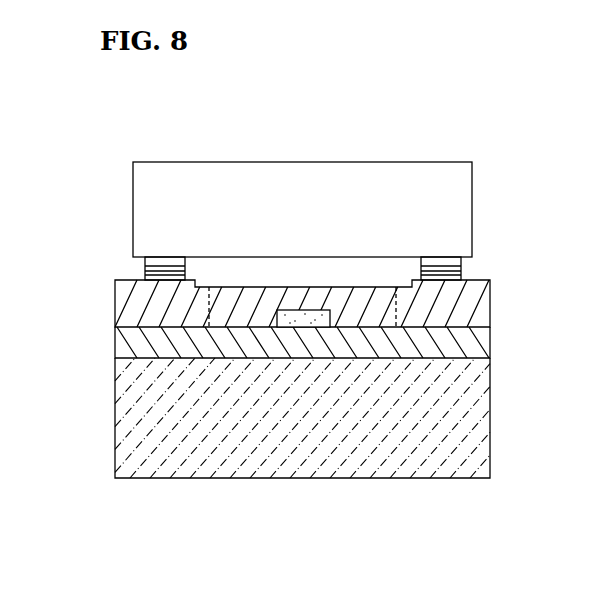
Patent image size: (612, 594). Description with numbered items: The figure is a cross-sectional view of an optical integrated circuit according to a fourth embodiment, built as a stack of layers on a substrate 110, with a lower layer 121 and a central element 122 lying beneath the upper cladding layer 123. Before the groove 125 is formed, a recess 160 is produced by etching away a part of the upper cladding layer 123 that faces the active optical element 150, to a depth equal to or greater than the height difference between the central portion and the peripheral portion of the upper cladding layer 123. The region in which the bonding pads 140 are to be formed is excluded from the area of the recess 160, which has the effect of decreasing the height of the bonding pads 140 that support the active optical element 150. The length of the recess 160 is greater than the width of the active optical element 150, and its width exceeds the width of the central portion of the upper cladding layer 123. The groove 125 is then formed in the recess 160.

The substrate 110 is at (480, 432).
The first insulating layer 121 is at (480, 347).
The wiring pattern 122 is at (277, 318).
The upper cladding layer 123 is at (482, 298).
The groove 125 is at (209, 327).
The bonding pads 140 is at (131, 270).
The active optical element 150 is at (452, 205).
The recess 160 is at (410, 285).